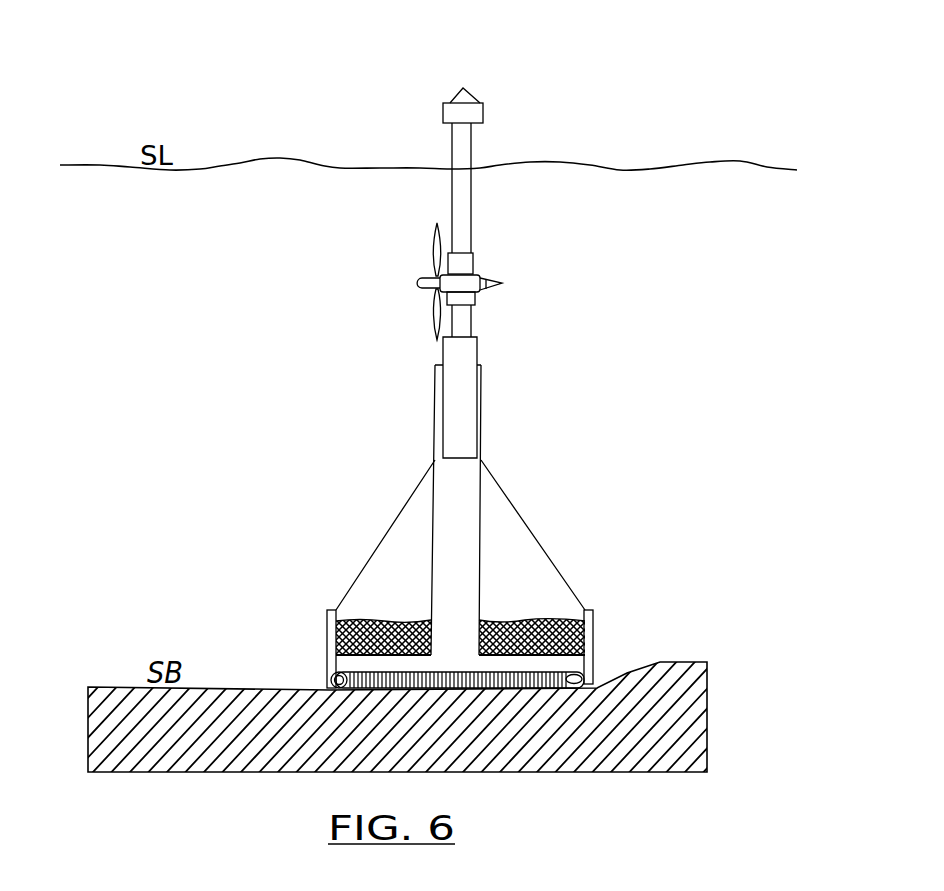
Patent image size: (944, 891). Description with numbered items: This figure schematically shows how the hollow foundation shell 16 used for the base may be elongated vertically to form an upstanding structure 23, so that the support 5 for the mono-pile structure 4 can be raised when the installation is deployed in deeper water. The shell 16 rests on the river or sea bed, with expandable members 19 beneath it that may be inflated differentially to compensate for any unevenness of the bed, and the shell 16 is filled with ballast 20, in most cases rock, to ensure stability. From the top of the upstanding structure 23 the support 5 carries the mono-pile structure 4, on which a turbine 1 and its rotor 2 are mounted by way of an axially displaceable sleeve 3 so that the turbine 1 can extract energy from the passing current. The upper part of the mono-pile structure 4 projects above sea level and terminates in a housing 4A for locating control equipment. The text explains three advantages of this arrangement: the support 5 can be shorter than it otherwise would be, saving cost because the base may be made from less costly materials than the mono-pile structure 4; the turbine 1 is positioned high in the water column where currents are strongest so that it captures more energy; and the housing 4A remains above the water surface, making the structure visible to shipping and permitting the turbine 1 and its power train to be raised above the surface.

The housing 4A is at (465, 112).
The mono-pile structure 4 is at (463, 150).
The axially displaceable sleeve 3 is at (463, 264).
The rotor 2 is at (433, 260).
The turbine 1 is at (417, 286).
The support 5 is at (463, 348).
The hollow foundation shell 16 is at (327, 643).
The ballast 20 is at (363, 622).
The expandable members 19 is at (328, 690).
The upstanding structure 23 is at (345, 469).